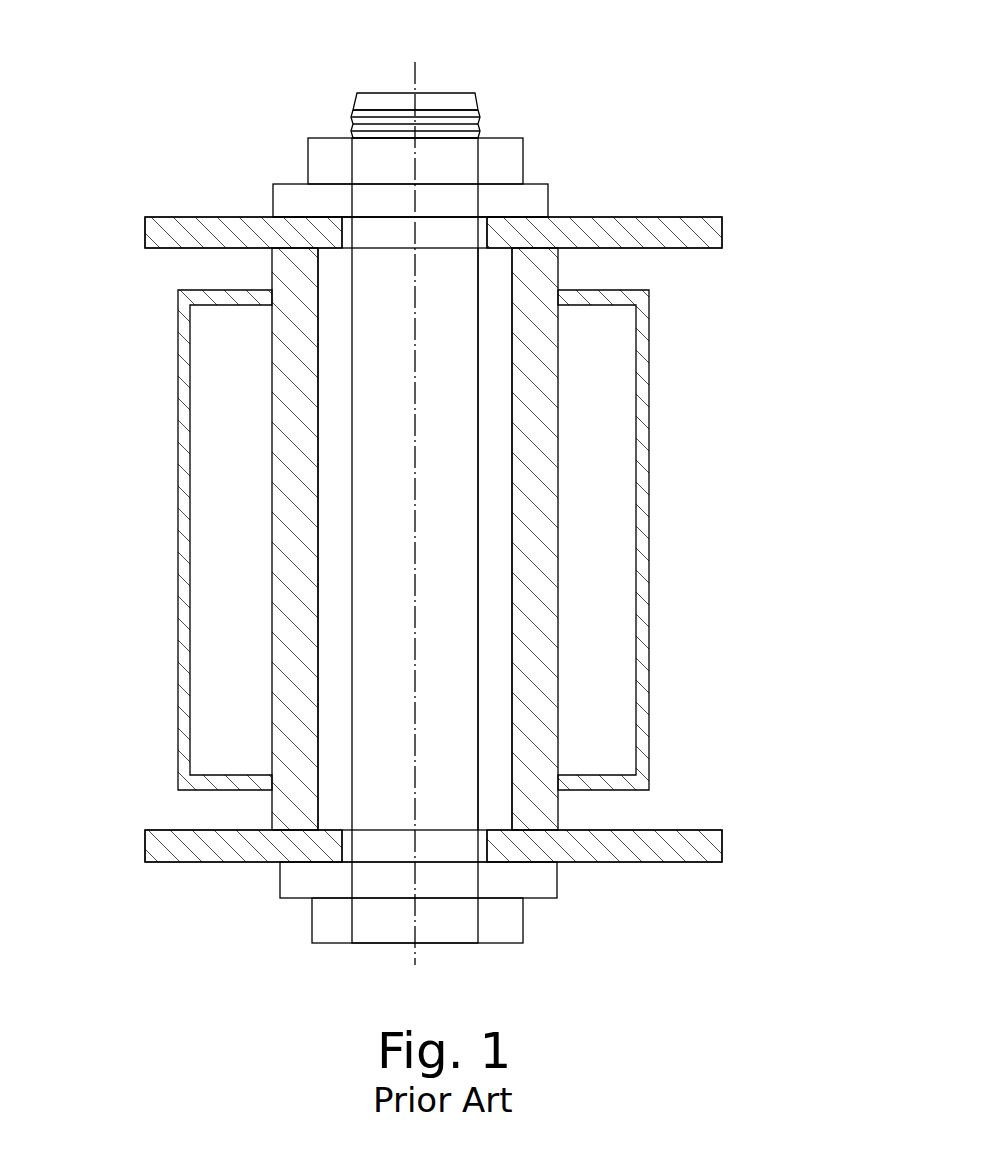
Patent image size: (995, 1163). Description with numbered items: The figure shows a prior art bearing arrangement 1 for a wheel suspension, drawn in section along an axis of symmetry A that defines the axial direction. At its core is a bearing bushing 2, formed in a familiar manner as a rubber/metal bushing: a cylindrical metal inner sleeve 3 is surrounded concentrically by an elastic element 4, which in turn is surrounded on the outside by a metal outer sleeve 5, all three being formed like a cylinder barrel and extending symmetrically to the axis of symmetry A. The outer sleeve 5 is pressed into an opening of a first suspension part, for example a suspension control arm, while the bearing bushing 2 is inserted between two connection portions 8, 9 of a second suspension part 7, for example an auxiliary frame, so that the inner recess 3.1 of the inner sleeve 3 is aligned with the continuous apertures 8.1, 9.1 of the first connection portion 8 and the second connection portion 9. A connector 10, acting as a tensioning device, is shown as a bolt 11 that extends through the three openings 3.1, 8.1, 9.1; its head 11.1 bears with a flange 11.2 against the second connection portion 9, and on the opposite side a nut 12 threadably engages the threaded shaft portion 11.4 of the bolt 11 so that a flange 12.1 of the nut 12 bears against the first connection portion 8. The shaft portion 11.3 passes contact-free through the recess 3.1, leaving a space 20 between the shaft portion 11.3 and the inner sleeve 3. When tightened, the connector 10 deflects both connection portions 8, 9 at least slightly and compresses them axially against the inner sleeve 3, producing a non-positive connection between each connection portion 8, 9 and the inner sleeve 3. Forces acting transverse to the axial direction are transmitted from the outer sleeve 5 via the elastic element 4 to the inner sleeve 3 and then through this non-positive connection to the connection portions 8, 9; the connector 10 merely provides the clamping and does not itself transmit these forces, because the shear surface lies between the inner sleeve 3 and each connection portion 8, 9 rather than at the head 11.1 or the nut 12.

The bearing arrangement 1 is at (775, 188).
The bearing bushing 2 is at (160, 483).
The inner sleeve 3 is at (529, 521).
The inner recess 3.1 is at (502, 358).
The elastic element 4 is at (285, 558).
The outer sleeve 5 is at (649, 583).
The second suspension part 7 is at (137, 207).
The first connection portion 8 is at (145, 233).
The aperture of first connection portion 8.1 is at (483, 233).
The second connection portion 9 is at (145, 851).
The aperture of second connection portion 9.1 is at (345, 858).
The connector 10 is at (285, 140).
The bolt 11 is at (381, 521).
The head of the bolt 11.1 is at (513, 915).
The flange of the bolt head 11.2 is at (287, 885).
The shaft portion 11.3 is at (473, 777).
The threaded shaft portion 11.4 is at (482, 120).
The nut 12 is at (523, 150).
The flange of the nut 12.1 is at (283, 208).
The space 20 is at (318, 357).
The axis of symmetry A is at (418, 487).